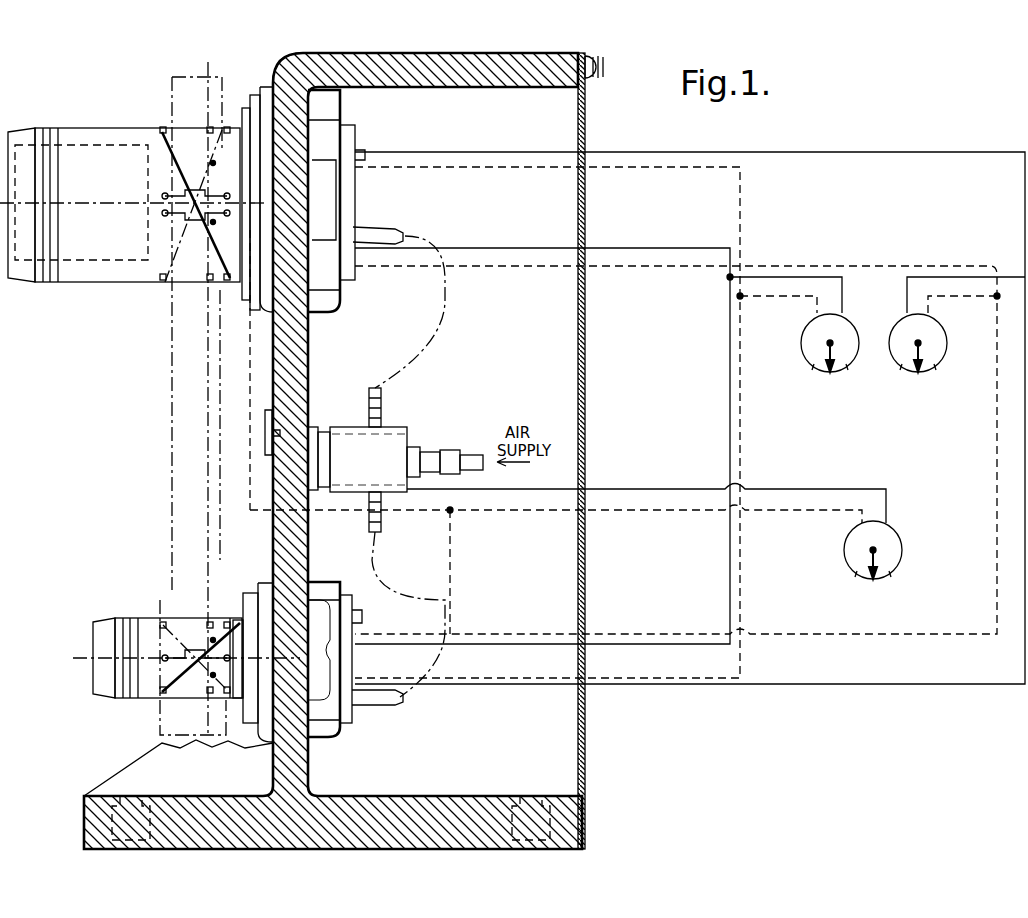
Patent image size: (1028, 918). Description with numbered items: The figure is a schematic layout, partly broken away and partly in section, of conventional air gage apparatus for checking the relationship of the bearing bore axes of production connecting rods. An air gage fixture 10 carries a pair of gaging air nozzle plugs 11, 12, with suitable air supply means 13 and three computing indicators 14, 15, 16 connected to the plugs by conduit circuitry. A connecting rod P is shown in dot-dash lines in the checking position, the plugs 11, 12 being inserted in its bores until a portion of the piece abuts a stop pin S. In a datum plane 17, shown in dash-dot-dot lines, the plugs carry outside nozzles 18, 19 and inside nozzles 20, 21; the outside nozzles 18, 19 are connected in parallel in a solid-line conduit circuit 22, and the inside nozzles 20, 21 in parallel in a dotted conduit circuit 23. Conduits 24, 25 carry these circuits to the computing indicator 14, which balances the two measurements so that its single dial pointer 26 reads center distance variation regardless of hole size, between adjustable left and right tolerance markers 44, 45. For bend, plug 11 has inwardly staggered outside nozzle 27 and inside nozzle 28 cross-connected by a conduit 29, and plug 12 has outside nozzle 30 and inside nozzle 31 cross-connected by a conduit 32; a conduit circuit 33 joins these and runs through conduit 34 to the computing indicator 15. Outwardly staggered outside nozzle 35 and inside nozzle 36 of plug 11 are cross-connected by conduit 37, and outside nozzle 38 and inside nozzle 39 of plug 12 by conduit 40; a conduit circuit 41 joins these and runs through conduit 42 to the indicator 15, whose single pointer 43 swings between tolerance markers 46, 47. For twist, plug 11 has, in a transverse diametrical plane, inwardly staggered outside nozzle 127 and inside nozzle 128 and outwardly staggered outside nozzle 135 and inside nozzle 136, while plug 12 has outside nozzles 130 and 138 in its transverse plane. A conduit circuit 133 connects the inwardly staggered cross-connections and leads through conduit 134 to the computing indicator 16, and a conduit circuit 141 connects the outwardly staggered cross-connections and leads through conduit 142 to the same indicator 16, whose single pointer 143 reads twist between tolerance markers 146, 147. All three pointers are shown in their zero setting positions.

The air gage fixture 10 is at (393, 782).
The gaging air nozzle plug 11 is at (92, 288).
The gaging air nozzle plug 12 is at (128, 615).
The air supply means 13 is at (412, 425).
The computing indicator 14 is at (952, 328).
The computing indicator 15 is at (803, 352).
The computing indicator 16 is at (898, 532).
The datum plane 17 is at (219, 72).
The outside nozzle 18 is at (210, 127).
The outside nozzle 19 is at (224, 695).
The inside nozzle 20 is at (208, 280).
The inside nozzle 21 is at (228, 620).
The outside nozzle conduit circuit 22 is at (826, 152).
The inside nozzle conduit circuit 23 is at (665, 272).
The conduit 24 is at (945, 277).
The conduit 25 is at (965, 300).
The dial pointer 26 is at (915, 348).
The outside nozzle 27 is at (160, 128).
The inside nozzle 28 is at (226, 282).
The cross-connecting conduit 29 is at (196, 168).
The outside nozzle 30 is at (160, 695).
The inside nozzle 31 is at (232, 628).
The cross-connecting conduit 32 is at (195, 686).
The conduit circuit 33 is at (640, 248).
The conduit 34 is at (800, 277).
The outside nozzle 35 is at (228, 127).
The inside nozzle 36 is at (158, 282).
The cross-connecting conduit 37 is at (190, 245).
The outside nozzle 38 is at (226, 695).
The inside nozzle 39 is at (162, 620).
The cross-connecting conduit 40 is at (210, 622).
The conduit circuit 41 is at (543, 186).
The conduit 42 is at (790, 300).
The dial pointer 43 is at (833, 350).
The left tolerance marker 44 is at (902, 368).
The right tolerance marker 45 is at (936, 368).
The left tolerance marker 46 is at (814, 368).
The right tolerance marker 47 is at (848, 366).
The outside nozzle 127 is at (160, 195).
The inside nozzle 128 is at (227, 216).
The outside nozzle 130 is at (162, 660).
The conduit circuit 133 is at (312, 332).
The conduit 134 is at (660, 486).
The outside nozzle 135 is at (227, 193).
The inside nozzle 136 is at (162, 213).
The outside nozzle 138 is at (195, 654).
The conduit circuit 141 is at (318, 352).
The conduit 142 is at (660, 515).
The dial pointer 143 is at (880, 558).
The left tolerance marker 146 is at (857, 573).
The right tolerance marker 147 is at (889, 574).
The stop pin S is at (252, 128).
The connecting rod P is at (163, 445).